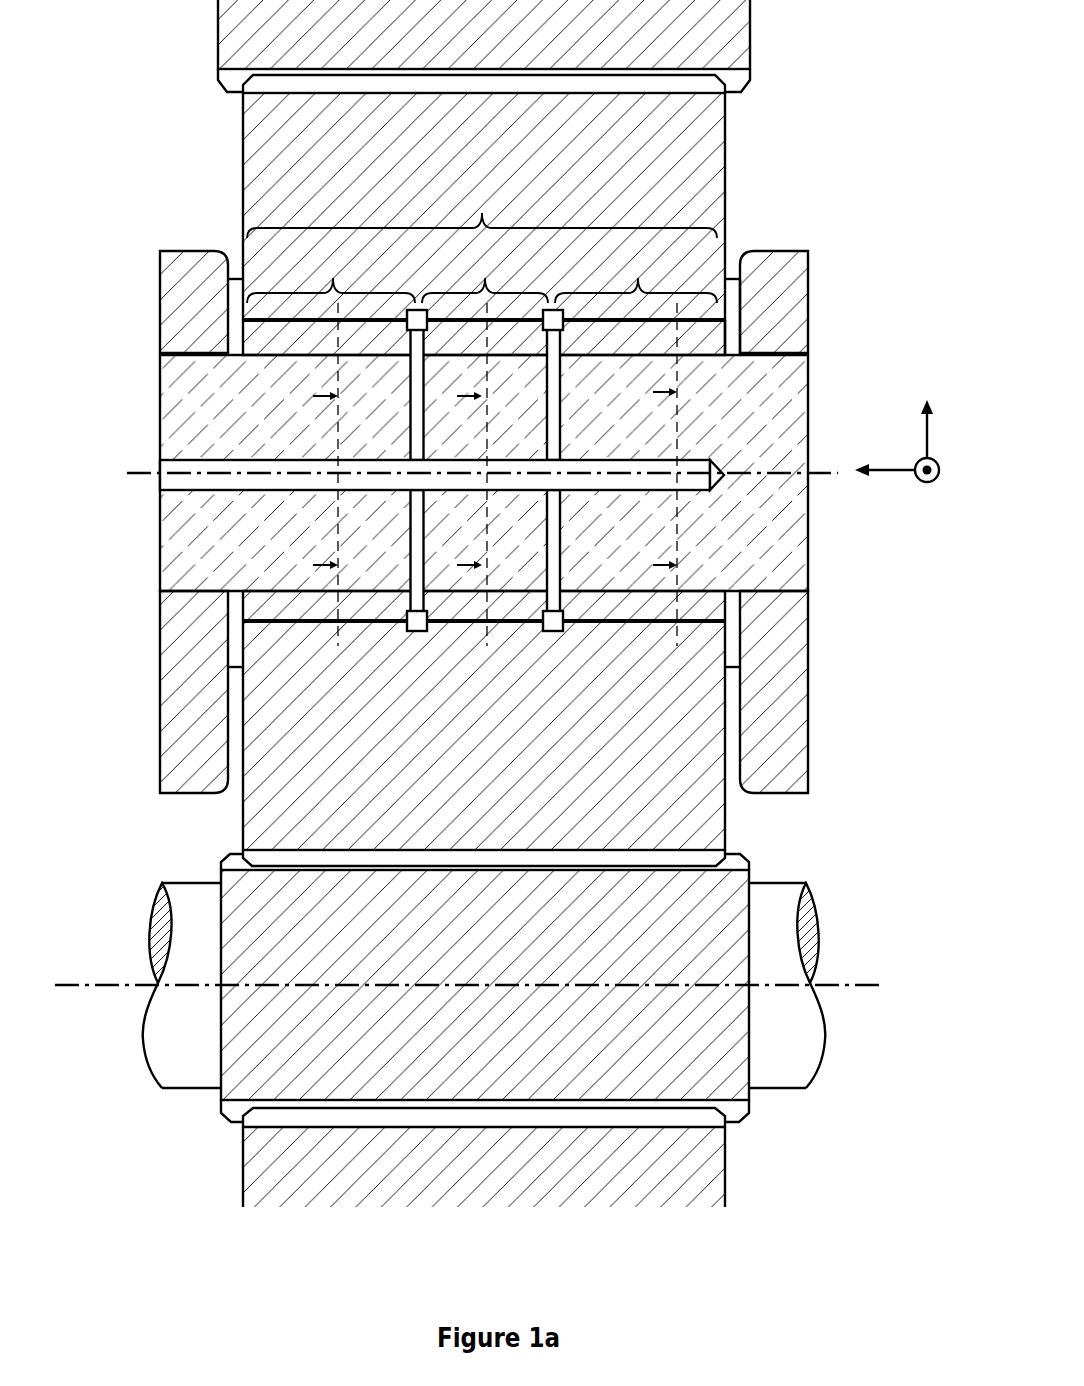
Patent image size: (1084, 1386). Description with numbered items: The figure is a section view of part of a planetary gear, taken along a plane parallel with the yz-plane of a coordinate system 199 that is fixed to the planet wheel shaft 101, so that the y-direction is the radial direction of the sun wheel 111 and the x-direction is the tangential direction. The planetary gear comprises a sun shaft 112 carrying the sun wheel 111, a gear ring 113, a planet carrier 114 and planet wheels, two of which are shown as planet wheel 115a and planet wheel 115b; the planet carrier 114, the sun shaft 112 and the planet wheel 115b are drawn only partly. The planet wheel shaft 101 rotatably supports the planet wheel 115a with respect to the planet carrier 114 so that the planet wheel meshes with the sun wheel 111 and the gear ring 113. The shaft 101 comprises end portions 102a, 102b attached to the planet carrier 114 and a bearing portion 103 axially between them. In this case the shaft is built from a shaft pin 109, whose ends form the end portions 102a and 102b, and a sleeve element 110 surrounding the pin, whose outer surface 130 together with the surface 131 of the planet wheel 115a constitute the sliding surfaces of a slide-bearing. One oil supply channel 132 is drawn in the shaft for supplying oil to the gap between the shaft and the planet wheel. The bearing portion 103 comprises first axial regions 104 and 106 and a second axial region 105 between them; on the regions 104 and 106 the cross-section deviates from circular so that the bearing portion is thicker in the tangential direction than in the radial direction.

The planet wheel shaft 101 is at (127, 406).
The end portion 102a is at (175, 549).
The end portion 102b is at (737, 535).
The bearing portion 103 is at (482, 211).
The first axial region 104 is at (331, 276).
The second axial region 105 is at (485, 276).
The first axial region 106 is at (636, 276).
The shaft pin 109 is at (212, 445).
The sleeve element 110 is at (695, 341).
The sun wheel 111 is at (465, 948).
The sun shaft 112 is at (765, 1050).
The gear ring 113 is at (457, 40).
The planet carrier 114 is at (168, 314).
The planet wheel 115a is at (401, 150).
The planet wheel 115b is at (451, 1183).
The surface of the bearing portion 130 is at (287, 336).
The surface of the planet wheel 131 is at (586, 306).
The oil supply channel 132 is at (560, 412).
The coordinate system 199 is at (870, 452).